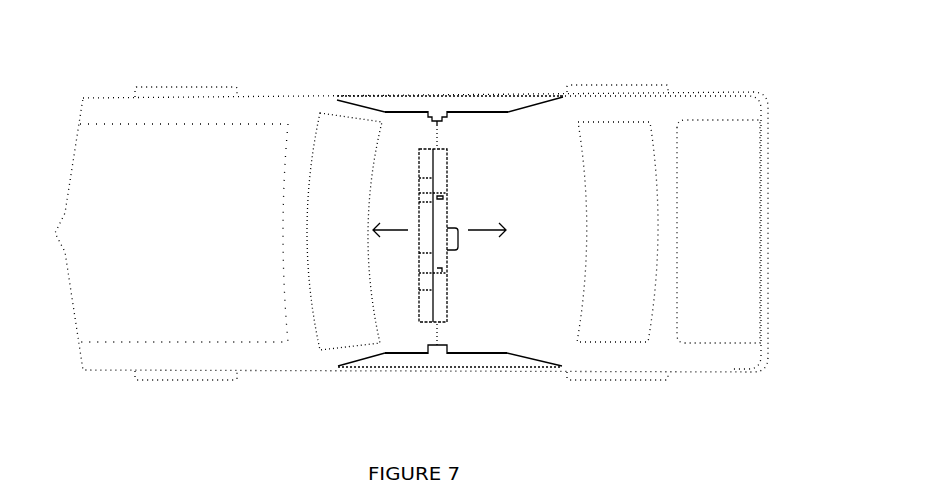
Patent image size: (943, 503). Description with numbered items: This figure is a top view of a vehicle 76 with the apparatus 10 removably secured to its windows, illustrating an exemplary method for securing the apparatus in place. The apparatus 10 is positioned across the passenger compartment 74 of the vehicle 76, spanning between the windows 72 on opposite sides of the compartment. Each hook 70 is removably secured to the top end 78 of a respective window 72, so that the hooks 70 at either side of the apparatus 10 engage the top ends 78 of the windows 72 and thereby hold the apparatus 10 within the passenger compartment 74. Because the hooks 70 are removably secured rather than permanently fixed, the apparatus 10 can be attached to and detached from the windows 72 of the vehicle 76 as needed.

The apparatus 10 is at (470, 183).
The hook 70 is at (449, 113).
The window 72 is at (508, 105).
The passenger compartment 74 is at (347, 158).
The vehicle 76 is at (720, 105).
The top end 78 is at (422, 112).